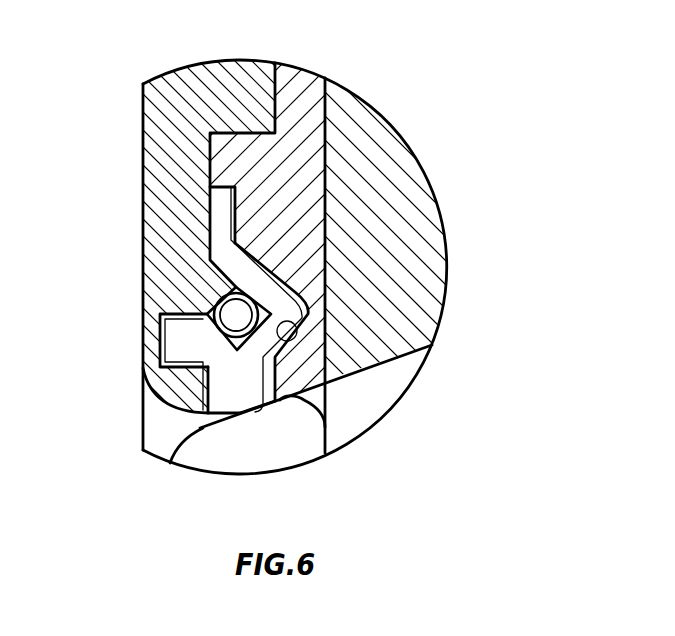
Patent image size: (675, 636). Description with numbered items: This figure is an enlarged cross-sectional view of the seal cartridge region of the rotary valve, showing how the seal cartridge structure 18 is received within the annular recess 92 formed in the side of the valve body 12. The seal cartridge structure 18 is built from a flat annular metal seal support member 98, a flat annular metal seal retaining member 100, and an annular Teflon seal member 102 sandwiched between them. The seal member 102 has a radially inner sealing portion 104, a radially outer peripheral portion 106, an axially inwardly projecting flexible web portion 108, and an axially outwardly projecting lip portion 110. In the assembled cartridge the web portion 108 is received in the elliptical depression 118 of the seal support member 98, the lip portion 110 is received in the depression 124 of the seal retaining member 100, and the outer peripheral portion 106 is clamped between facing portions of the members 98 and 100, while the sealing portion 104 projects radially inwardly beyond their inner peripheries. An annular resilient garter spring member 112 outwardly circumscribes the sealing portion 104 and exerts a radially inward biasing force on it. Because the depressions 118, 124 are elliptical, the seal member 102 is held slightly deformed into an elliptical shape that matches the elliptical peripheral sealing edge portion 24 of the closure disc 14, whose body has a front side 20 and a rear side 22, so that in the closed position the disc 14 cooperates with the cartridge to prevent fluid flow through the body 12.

The valve body 12 is at (420, 196).
The closure disc 14 is at (300, 451).
The seal cartridge structure 18 is at (141, 118).
The front side 20 is at (178, 448).
The rear side 22 is at (291, 440).
The peripheral sealing edge portion 24 is at (283, 397).
The annular recess 92 is at (316, 96).
The seal support member 98 is at (308, 150).
The seal retaining member 100 is at (204, 76).
The seal member 102 is at (238, 392).
The sealing portion 104 is at (222, 403).
The outer peripheral portion 106 is at (222, 213).
The flexible web portion 108 is at (281, 313).
The lip portion 110 is at (183, 335).
The garter spring member 112 is at (222, 297).
The depression 118 is at (302, 337).
The depression 124 is at (190, 358).